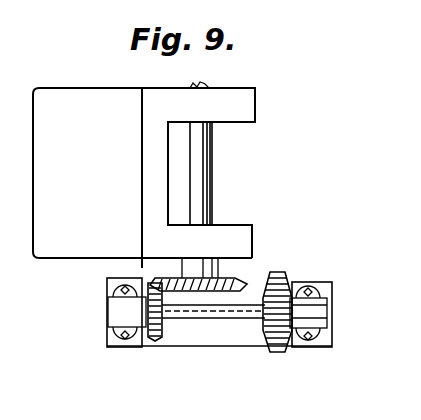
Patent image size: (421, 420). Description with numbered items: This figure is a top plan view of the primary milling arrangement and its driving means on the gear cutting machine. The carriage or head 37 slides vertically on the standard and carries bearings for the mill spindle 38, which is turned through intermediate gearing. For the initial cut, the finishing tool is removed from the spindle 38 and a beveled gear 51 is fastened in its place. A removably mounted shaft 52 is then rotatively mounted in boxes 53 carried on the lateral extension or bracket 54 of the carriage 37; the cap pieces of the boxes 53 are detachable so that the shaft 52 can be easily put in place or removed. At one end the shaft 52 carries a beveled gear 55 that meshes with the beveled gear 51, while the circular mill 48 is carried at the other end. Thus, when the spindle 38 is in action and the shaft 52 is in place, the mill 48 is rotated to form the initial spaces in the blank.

The carriage or head 37 is at (144, 180).
The mill spindle 38 is at (212, 196).
The beveled gear 55 is at (143, 262).
The boxes 53 is at (118, 312).
The beveled gear 51 is at (252, 278).
The lateral extension or bracket 54 is at (172, 333).
The shaft 52 is at (203, 308).
The mill 48 is at (276, 351).